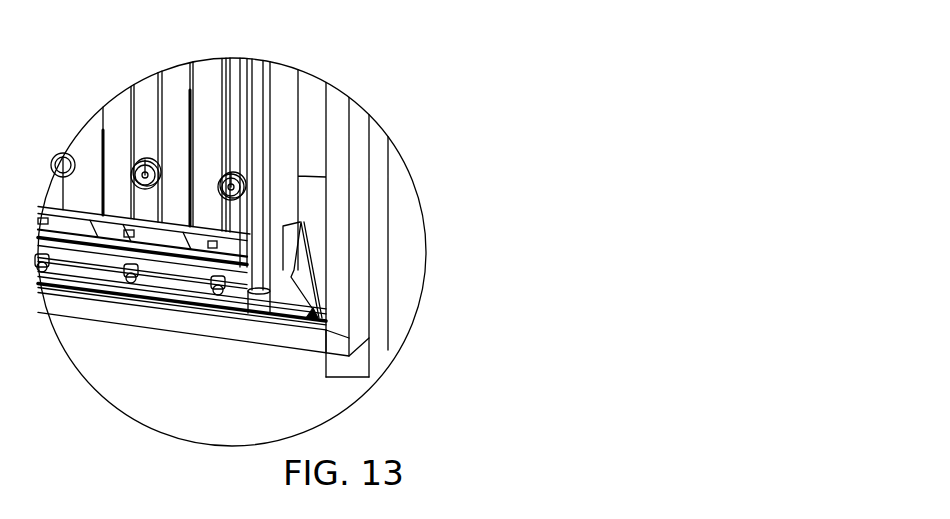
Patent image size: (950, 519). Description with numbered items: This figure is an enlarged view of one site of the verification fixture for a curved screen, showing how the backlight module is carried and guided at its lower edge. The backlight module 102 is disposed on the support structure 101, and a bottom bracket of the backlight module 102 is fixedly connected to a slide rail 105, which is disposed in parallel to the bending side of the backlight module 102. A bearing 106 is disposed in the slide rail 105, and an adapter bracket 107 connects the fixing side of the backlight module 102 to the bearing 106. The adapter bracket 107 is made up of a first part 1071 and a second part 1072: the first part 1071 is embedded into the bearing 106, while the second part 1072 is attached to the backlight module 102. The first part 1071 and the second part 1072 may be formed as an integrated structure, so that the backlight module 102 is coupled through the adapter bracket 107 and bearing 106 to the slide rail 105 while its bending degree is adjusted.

The support structure 101 is at (357, 169).
The backlight module 102 is at (255, 205).
The adapter bracket 107 is at (454, 264).
The first part 1071 is at (283, 226).
The second part 1072 is at (292, 272).
The bearing 106 is at (268, 292).
The slide rail 105 is at (293, 307).